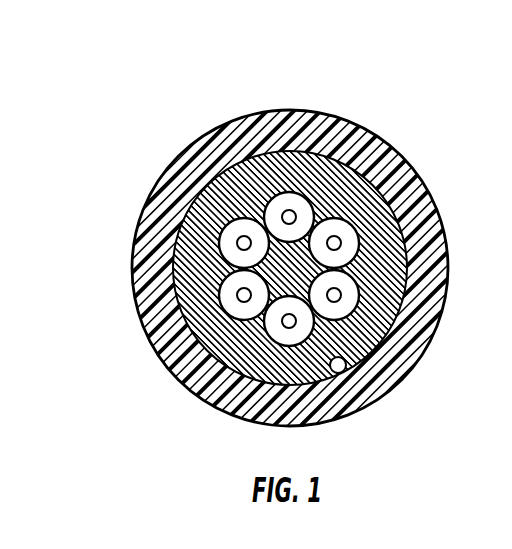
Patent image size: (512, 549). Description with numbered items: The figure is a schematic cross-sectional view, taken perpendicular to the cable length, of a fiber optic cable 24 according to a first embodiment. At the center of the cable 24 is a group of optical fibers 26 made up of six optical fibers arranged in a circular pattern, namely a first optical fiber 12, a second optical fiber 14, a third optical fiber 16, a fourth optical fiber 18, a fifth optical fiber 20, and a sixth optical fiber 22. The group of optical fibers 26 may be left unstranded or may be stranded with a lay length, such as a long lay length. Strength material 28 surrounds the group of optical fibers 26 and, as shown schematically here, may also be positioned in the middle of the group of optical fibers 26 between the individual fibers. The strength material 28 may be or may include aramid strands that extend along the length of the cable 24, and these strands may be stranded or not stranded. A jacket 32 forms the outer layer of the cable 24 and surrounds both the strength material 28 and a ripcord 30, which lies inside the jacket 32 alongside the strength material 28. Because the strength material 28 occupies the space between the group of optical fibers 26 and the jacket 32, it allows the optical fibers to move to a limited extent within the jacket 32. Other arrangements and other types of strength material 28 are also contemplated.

The first optical fiber 12 is at (183, 217).
The second optical fiber 14 is at (283, 191).
The third optical fiber 16 is at (342, 194).
The fourth optical fiber 18 is at (403, 300).
The fifth optical fiber 20 is at (273, 344).
The sixth optical fiber 22 is at (164, 265).
The fiber optic cable 24 is at (180, 93).
The group of optical fibers 26 is at (358, 320).
The strength material 28 is at (298, 272).
The ripcord 30 is at (348, 383).
The jacket 32 is at (348, 127).